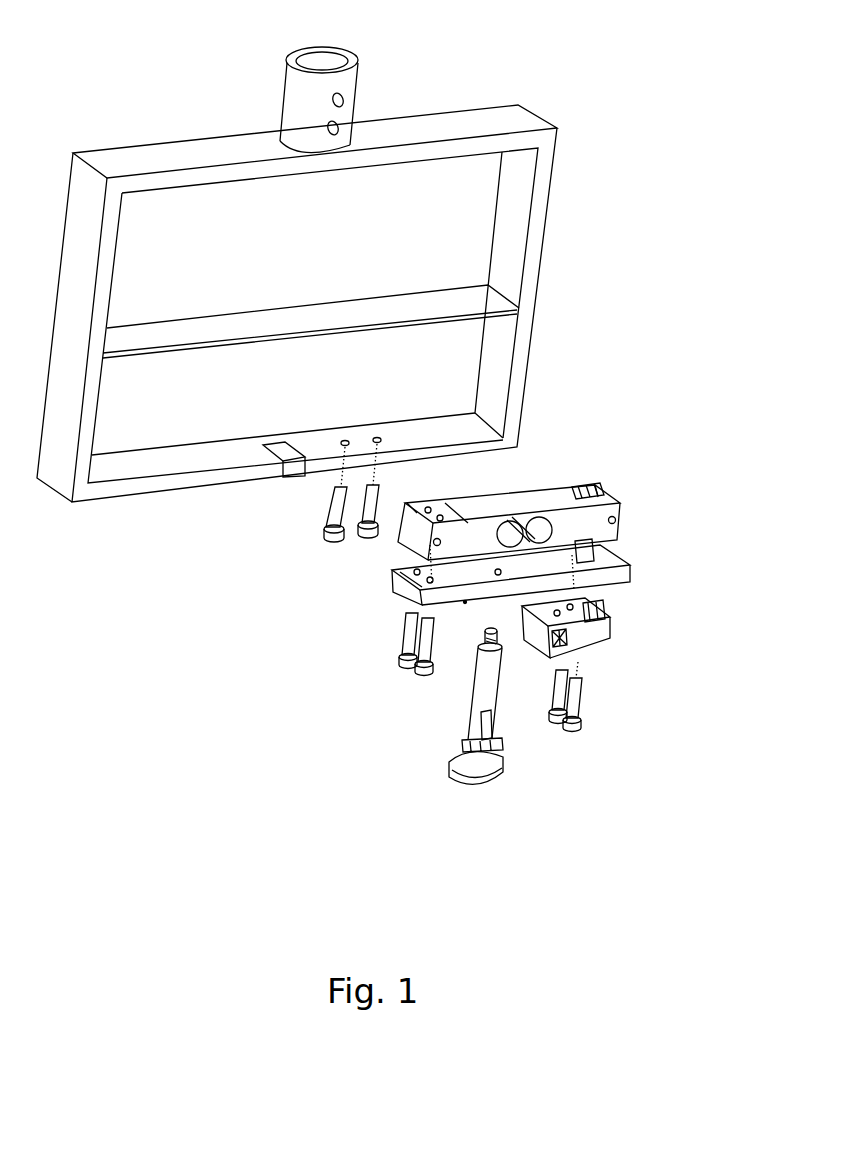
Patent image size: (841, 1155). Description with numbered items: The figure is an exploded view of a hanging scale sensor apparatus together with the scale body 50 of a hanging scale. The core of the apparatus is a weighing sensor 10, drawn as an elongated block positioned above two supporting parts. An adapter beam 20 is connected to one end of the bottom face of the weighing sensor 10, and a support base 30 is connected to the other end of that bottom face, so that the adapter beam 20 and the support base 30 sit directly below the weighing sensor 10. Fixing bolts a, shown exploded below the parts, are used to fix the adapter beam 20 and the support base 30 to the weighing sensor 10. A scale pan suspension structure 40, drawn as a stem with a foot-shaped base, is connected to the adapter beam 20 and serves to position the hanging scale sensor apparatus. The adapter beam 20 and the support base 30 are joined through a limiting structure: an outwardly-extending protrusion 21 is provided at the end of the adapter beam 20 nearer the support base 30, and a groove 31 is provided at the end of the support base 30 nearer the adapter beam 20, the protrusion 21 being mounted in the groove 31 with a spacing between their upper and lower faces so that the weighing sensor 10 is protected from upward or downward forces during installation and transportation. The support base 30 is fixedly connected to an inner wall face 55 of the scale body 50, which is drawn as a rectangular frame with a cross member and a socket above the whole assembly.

The weighing sensor 10 is at (620, 512).
The adapter beam 20 is at (563, 587).
The protrusion 21 is at (562, 585).
The support base 30 is at (612, 632).
The groove 31 is at (563, 640).
The scale pan suspension structure 40 is at (482, 725).
The scale body 50 is at (523, 271).
The inner wall face 55 is at (192, 460).
The fixing bolt a is at (332, 508).